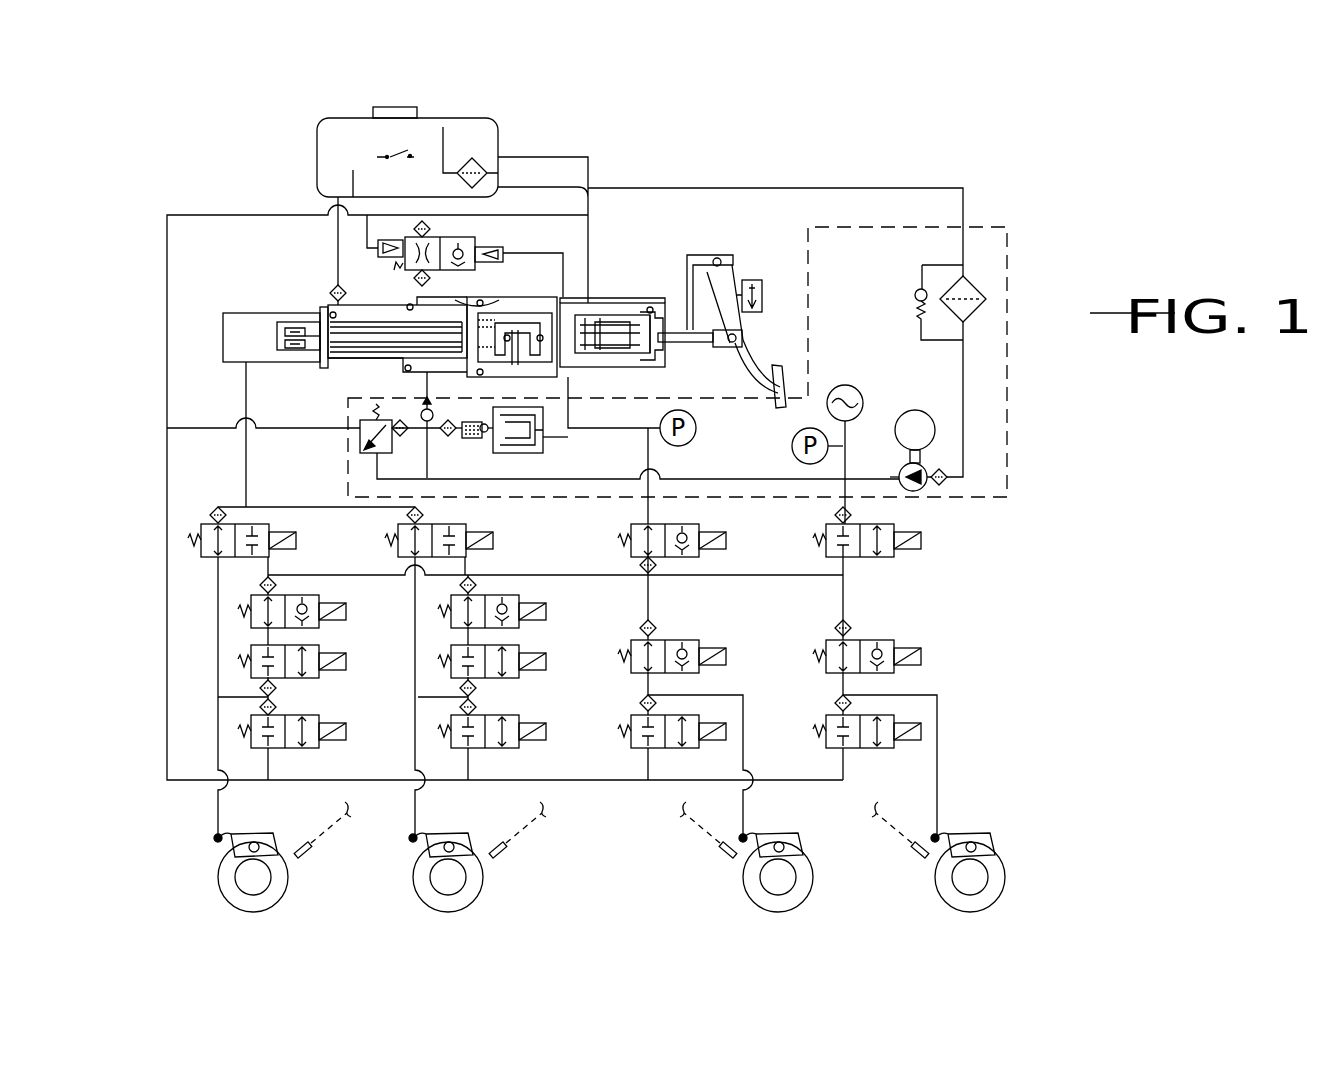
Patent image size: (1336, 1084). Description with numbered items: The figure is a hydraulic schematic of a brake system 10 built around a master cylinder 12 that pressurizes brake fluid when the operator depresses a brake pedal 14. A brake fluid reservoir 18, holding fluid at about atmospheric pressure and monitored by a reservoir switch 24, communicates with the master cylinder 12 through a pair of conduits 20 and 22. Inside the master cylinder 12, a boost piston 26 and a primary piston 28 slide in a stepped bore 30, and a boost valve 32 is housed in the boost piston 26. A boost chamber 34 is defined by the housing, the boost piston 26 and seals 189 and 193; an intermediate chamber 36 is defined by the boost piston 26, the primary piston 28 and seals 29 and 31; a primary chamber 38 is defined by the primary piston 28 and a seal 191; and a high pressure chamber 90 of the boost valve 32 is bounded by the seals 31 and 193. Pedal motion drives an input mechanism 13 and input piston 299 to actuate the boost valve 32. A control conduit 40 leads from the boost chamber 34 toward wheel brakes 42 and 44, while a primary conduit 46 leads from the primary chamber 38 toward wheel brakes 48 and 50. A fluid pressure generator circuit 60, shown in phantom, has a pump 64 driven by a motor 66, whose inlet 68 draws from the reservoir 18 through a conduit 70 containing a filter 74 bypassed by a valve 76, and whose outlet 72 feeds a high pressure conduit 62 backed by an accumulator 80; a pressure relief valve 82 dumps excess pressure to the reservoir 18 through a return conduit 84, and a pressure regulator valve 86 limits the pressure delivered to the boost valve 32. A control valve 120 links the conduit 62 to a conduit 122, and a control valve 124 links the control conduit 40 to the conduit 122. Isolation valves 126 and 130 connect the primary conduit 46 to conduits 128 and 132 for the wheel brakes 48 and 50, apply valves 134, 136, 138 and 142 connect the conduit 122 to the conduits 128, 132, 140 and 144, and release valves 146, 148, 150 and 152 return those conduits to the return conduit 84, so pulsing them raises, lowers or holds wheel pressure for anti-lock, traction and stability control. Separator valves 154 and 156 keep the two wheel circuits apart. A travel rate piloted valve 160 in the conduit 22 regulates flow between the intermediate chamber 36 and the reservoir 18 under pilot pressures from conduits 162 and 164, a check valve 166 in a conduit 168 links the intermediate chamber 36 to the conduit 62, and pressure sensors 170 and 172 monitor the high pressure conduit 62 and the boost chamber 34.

The brake system 10 is at (1060, 101).
The master cylinder 12 is at (314, 299).
The input mechanism 13 is at (640, 368).
The brake pedal 14 is at (748, 392).
The brake fluid reservoir 18 is at (463, 118).
The conduit 20 is at (333, 208).
The conduit 22 is at (543, 157).
The reservoir switch 24 is at (398, 142).
The boost piston 26 is at (598, 310).
The primary piston 28 is at (413, 305).
The seal 29 is at (334, 288).
The stepped bore 30 is at (358, 370).
The seal 31 is at (592, 300).
The boost valve 32 is at (536, 372).
The boost chamber 34 is at (610, 356).
The intermediate chamber 36 is at (452, 300).
The primary chamber 38 is at (235, 330).
The control conduit 40 is at (592, 430).
The wheel brake 42 is at (780, 833).
The wheel brake 44 is at (975, 833).
The primary conduit 46 is at (246, 388).
The wheel brake 48 is at (258, 833).
The wheel brake 50 is at (452, 833).
The fluid pressure generator circuit 60 is at (1012, 362).
The high pressure conduit 62 is at (685, 478).
The pump 64 is at (926, 487).
The motor 66 is at (913, 410).
The pump inlet 68 is at (930, 470).
The conduit 70 is at (888, 188).
The pump outlet 72 is at (898, 484).
The filter 74 is at (985, 290).
The valve 76 is at (915, 290).
The accumulator 80 is at (843, 385).
The pressure relief valve 82 is at (360, 440).
The return conduit 84 is at (167, 402).
The pressure regulator valve 86 is at (527, 452).
The high pressure chamber 90 is at (427, 385).
The control valve 120 is at (897, 555).
The conduit 122 is at (552, 575).
The control valve 124 is at (642, 522).
The isolation valve 126 is at (268, 570).
The conduit 128 is at (218, 730).
The isolation valve 130 is at (466, 570).
The conduit 132 is at (415, 748).
The apply valve 134 is at (322, 625).
The apply valve 136 is at (522, 625).
The apply valve 138 is at (668, 640).
The conduit 140 is at (748, 742).
The apply valve 142 is at (866, 640).
The conduit 144 is at (940, 718).
The release valve 146 is at (320, 715).
The release valve 148 is at (520, 715).
The release valve 150 is at (683, 713).
The release valve 152 is at (862, 750).
The separator valve 154 is at (322, 668).
The separator valve 156 is at (522, 668).
The travel rate piloted valve 160 is at (483, 240).
The conduit 162 is at (370, 225).
The conduit 164 is at (595, 305).
The check valve 166 is at (434, 415).
The conduit 168 is at (432, 444).
The pressure sensor 170 is at (803, 463).
The pressure sensor 172 is at (698, 437).
The seal 189 is at (600, 318).
The seal 191 is at (314, 306).
The seal 193 is at (620, 300).
The input piston 299 is at (665, 345).